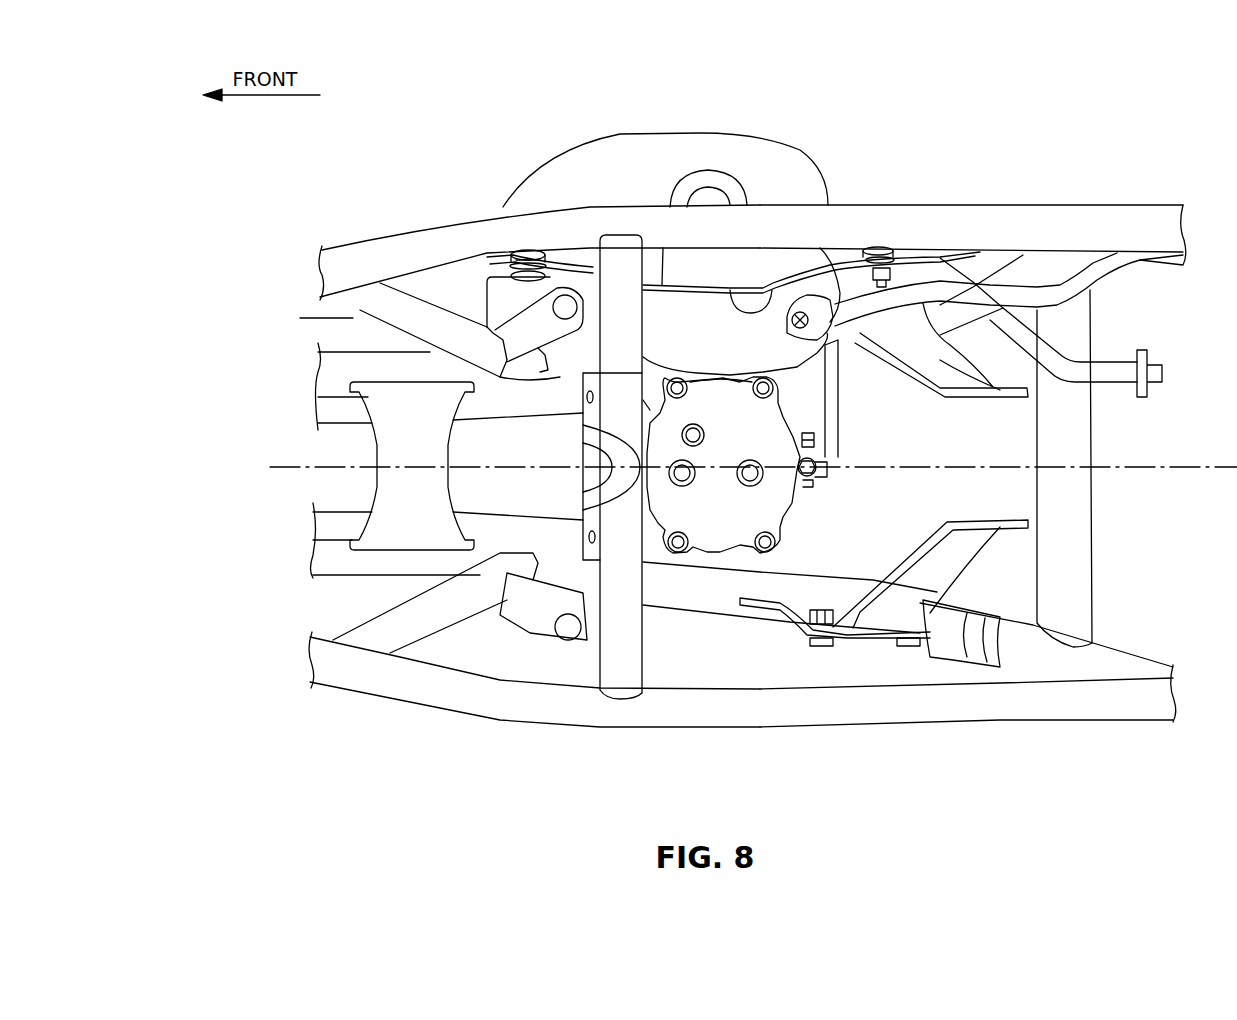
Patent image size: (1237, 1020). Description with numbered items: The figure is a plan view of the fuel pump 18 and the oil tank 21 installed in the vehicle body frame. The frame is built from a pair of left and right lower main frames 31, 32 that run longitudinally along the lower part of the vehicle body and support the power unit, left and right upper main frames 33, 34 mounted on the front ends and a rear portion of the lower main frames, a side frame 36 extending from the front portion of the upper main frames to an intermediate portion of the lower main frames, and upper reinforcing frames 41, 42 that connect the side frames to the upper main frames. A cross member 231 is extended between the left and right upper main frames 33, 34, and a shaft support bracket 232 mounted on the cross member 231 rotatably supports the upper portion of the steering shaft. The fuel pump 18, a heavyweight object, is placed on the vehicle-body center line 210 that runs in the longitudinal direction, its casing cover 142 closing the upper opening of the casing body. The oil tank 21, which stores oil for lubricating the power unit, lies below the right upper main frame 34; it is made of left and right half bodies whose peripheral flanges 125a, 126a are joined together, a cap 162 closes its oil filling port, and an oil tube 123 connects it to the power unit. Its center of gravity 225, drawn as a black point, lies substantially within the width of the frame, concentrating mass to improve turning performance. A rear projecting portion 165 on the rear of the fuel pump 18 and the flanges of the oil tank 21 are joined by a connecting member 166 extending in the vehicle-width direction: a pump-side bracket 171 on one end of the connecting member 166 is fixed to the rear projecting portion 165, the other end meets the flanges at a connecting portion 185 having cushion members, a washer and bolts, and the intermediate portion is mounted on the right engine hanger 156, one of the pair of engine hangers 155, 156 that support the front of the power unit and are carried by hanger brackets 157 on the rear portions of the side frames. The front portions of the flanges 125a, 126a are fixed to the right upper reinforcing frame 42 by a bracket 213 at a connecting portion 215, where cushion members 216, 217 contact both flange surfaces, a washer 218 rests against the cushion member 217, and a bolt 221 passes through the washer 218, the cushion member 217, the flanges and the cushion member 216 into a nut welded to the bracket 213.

The fuel pump 18 is at (718, 555).
The oil tank 21 is at (655, 133).
The lower main frame 31 is at (1117, 667).
The lower main frame 32 is at (1133, 272).
The upper main frame 33 is at (450, 697).
The upper main frame 34 is at (362, 255).
The side frame 36 is at (747, 617).
The upper reinforcing frame 41 is at (383, 627).
The upper reinforcing frame 42 is at (380, 307).
The oil tube 123 is at (1057, 293).
The flange 125a is at (777, 277).
The flange 126a is at (758, 285).
The casing cover 142 is at (780, 500).
The engine hanger 155 is at (955, 572).
The engine hanger 156 is at (940, 363).
The hanger bracket 157 is at (793, 623).
The cap 162 is at (743, 285).
The rear projecting portion 165 is at (833, 470).
The connecting member 166 is at (845, 390).
The pump-side bracket 171 is at (833, 442).
The connecting portion 185 is at (878, 248).
The vehicle-body center line 210 is at (293, 468).
The bracket 213 is at (493, 303).
The connecting portion 215 is at (530, 232).
The cushion member 216 is at (552, 283).
The cushion member 217 is at (513, 255).
The washer 218 is at (517, 271).
The bolt 221 is at (523, 250).
The center of gravity 225 is at (704, 262).
The cross member 231 is at (607, 663).
The shaft support bracket 232 is at (590, 525).